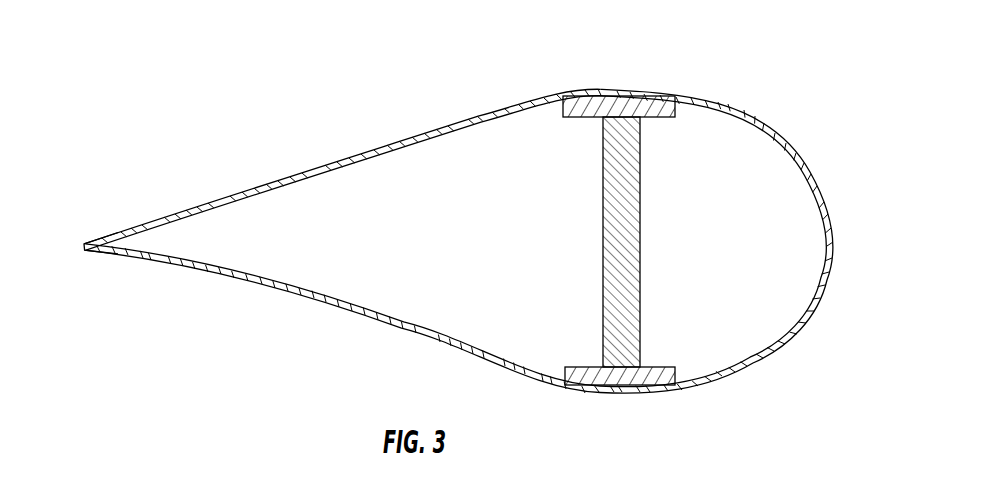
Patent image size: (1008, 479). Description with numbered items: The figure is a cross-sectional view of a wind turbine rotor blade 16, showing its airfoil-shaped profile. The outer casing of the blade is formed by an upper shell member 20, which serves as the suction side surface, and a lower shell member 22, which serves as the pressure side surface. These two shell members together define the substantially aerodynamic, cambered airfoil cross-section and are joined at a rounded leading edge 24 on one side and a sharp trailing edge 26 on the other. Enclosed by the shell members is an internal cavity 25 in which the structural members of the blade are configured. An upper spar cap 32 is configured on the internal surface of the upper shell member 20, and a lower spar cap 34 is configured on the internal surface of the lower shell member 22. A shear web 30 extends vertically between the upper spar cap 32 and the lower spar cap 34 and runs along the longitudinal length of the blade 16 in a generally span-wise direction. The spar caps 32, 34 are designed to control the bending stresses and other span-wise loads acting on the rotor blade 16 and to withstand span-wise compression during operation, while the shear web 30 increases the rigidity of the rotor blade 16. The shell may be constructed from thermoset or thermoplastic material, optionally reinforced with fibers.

The rotor blade 16 is at (219, 131).
The upper shell member 20 is at (490, 116).
The lower shell member 22 is at (463, 349).
The leading edge 24 is at (834, 241).
The internal cavity 25 is at (407, 283).
The trailing edge 26 is at (85, 247).
The shear web 30 is at (640, 183).
The upper spar cap 32 is at (577, 118).
The lower spar cap 34 is at (588, 367).